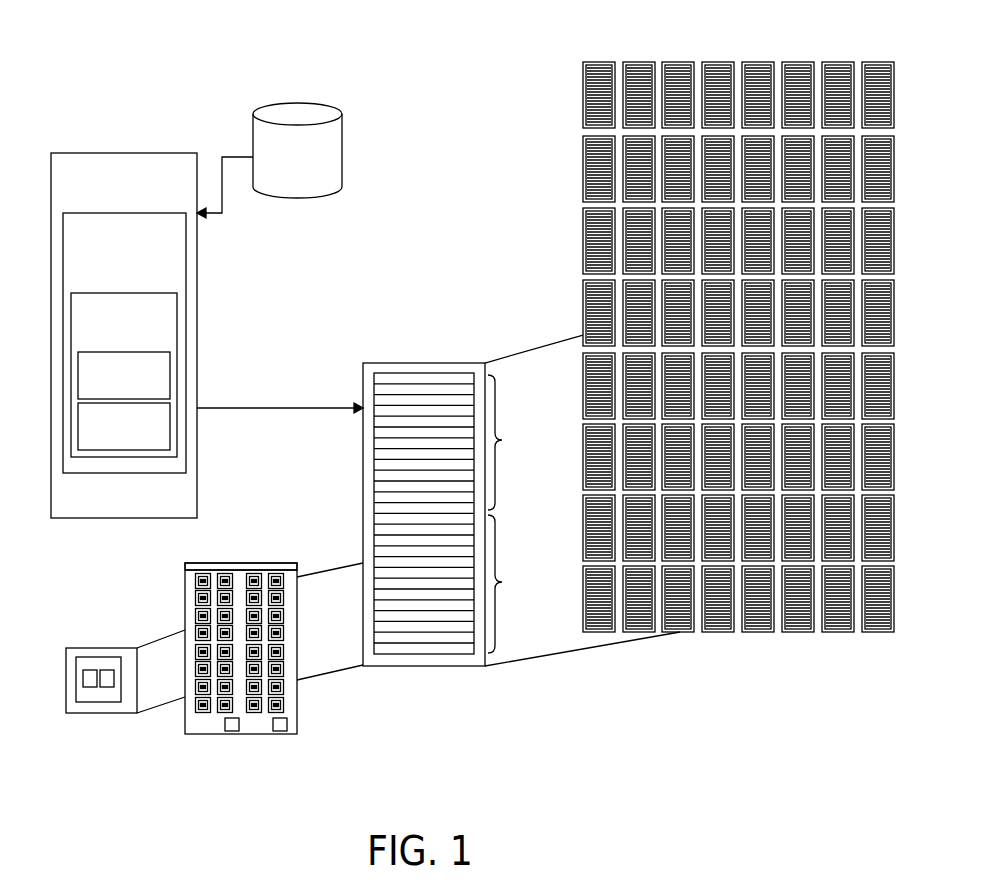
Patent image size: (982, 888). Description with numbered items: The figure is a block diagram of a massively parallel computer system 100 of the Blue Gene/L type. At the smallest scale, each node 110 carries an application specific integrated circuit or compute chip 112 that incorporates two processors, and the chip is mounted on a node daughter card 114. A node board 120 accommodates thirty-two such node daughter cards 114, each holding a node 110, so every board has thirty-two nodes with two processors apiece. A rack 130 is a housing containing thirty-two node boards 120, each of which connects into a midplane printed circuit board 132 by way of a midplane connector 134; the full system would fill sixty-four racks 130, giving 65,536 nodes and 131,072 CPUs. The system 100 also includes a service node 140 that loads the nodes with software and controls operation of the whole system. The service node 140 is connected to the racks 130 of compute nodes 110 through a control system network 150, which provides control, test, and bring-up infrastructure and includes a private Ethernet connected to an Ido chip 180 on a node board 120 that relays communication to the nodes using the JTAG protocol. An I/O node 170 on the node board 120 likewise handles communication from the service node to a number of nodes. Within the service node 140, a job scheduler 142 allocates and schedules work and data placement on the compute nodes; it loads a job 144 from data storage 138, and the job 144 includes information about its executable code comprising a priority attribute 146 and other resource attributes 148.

The massively parallel computer system 100 is at (171, 82).
The node 110 is at (82, 647).
The application specific integrated circuit (compute chip) 112 is at (76, 703).
The node daughter card 114 is at (110, 714).
The node board 120 is at (297, 617).
The rack 130 is at (400, 363).
The midplane printed circuit board 132 is at (535, 514).
The midplane connector 134 is at (185, 567).
The data storage 138 is at (343, 130).
The service node 140 is at (133, 195).
The job scheduler 142 is at (133, 287).
The job 144 is at (127, 345).
The priority attribute 146 is at (171, 375).
The resource attributes 148 is at (171, 412).
The control system network 150 is at (239, 409).
The I/O node 170 is at (232, 732).
The Ido chip 180 is at (280, 732).